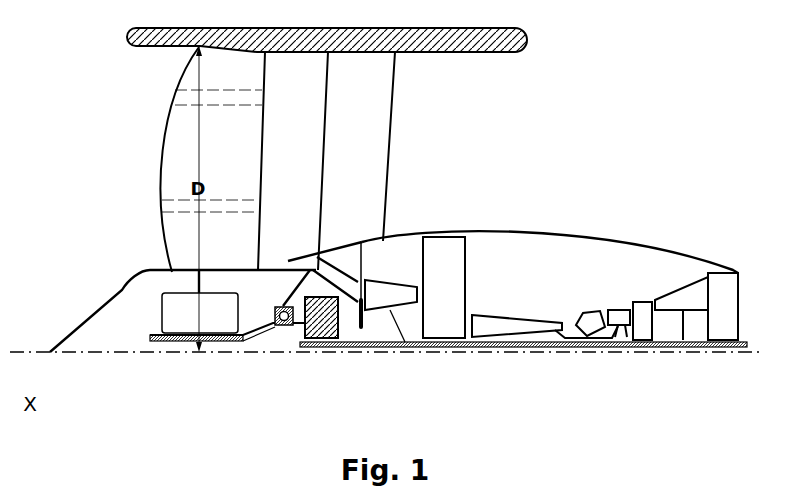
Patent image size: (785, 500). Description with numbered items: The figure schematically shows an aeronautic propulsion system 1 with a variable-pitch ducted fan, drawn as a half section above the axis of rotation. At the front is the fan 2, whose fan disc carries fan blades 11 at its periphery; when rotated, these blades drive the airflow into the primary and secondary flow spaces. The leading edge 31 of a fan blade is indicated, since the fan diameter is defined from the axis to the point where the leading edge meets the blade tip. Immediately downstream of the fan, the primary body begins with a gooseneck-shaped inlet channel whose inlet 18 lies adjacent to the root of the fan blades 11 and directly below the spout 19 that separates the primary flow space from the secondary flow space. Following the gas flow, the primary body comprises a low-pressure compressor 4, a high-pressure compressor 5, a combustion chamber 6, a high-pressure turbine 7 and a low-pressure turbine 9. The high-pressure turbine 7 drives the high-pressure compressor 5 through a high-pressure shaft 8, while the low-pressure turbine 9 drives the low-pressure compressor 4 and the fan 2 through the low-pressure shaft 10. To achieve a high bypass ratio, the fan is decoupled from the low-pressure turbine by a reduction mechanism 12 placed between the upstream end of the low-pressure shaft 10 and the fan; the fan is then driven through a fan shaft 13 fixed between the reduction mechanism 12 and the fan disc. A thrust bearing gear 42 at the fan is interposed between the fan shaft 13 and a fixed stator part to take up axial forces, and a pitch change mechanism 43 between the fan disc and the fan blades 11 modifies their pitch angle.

The propulsion system 1 is at (549, 287).
The fan 2 is at (222, 199).
The low-pressure compressor 4 is at (391, 311).
The high-pressure compressor 5 is at (517, 326).
The combustion chamber 6 is at (584, 336).
The high-pressure turbine 7 is at (626, 330).
The high-pressure shaft 8 is at (548, 340).
The low-pressure turbine 9 is at (681, 308).
The low-pressure shaft 10 is at (367, 347).
The fan blades 11 is at (303, 161).
The reduction mechanism 12 is at (323, 347).
The fan shaft 13 is at (178, 342).
The inlet 18 is at (305, 266).
The spout 19 is at (306, 257).
The leading edge 31 is at (172, 103).
The thrust bearing gear 42 is at (281, 327).
The pitch change mechanism 43 is at (167, 313).